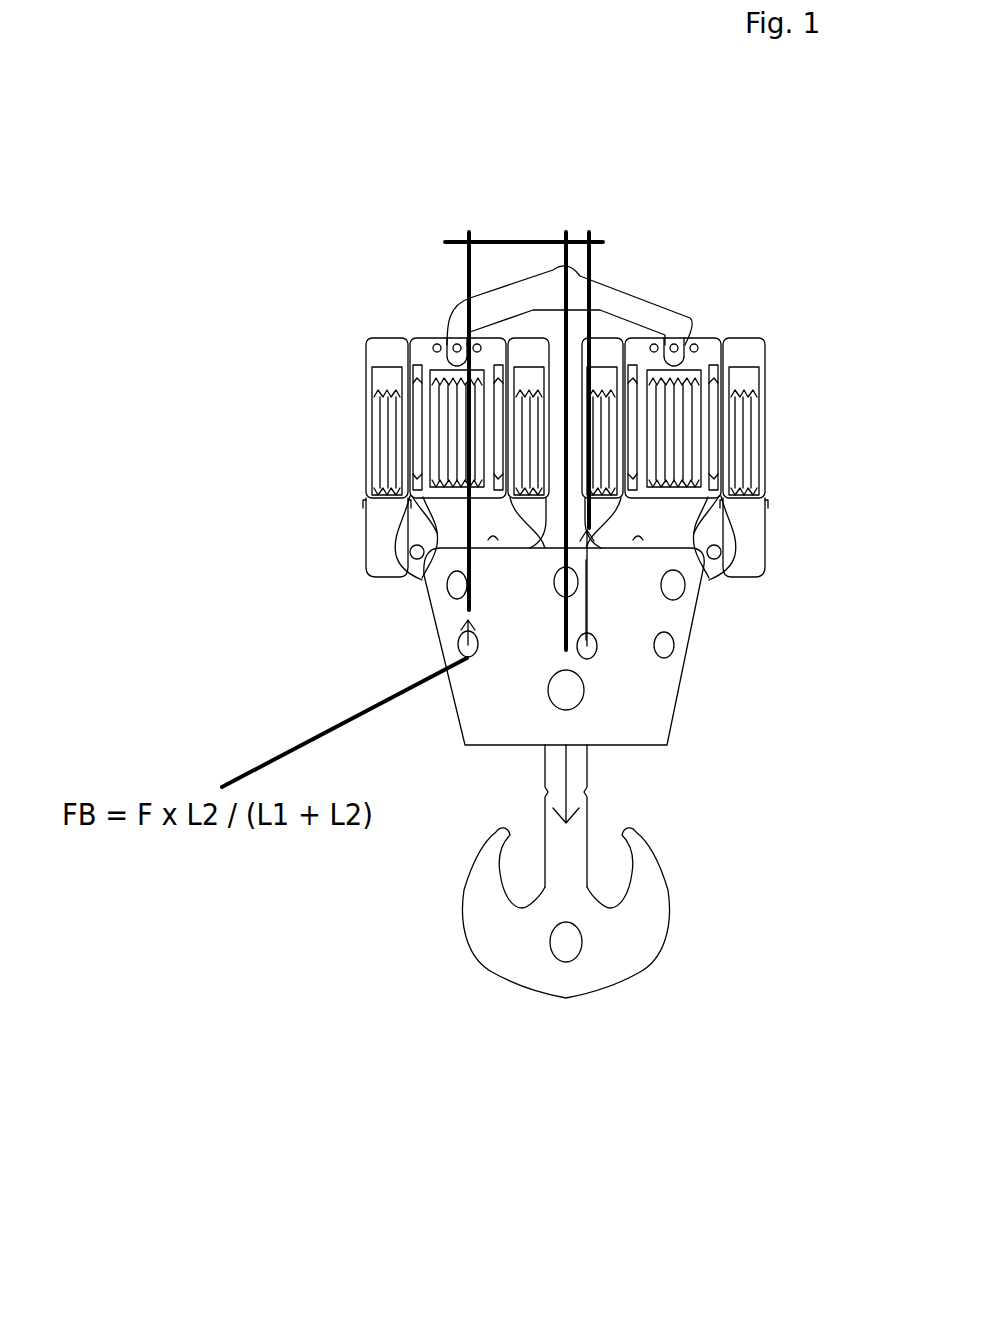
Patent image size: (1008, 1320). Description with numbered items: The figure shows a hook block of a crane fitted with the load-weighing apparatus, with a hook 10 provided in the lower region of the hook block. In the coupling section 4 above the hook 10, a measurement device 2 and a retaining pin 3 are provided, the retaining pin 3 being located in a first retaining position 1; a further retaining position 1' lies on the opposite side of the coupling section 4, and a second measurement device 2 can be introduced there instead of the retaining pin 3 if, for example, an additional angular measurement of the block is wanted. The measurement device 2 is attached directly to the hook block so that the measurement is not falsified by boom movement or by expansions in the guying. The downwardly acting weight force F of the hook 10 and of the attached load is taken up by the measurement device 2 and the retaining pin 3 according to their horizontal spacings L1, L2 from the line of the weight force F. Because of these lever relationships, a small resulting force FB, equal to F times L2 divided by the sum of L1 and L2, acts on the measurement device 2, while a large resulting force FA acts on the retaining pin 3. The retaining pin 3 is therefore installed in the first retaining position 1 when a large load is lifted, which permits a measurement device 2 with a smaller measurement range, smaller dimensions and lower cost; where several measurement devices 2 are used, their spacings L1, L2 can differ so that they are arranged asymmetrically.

The first retaining position 1 is at (670, 637).
The retaining position 1' is at (728, 658).
The measurement device 2 is at (456, 650).
The retaining pin 3 is at (602, 652).
The coupling section 4 is at (492, 735).
The hook 10 is at (570, 965).
The weight force F is at (573, 768).
The resulting force on the retaining pin FA is at (592, 620).
The resulting force on the measurement device FB is at (462, 630).
The horizontal spacing L1 is at (524, 395).
The horizontal spacing L2 is at (580, 415).